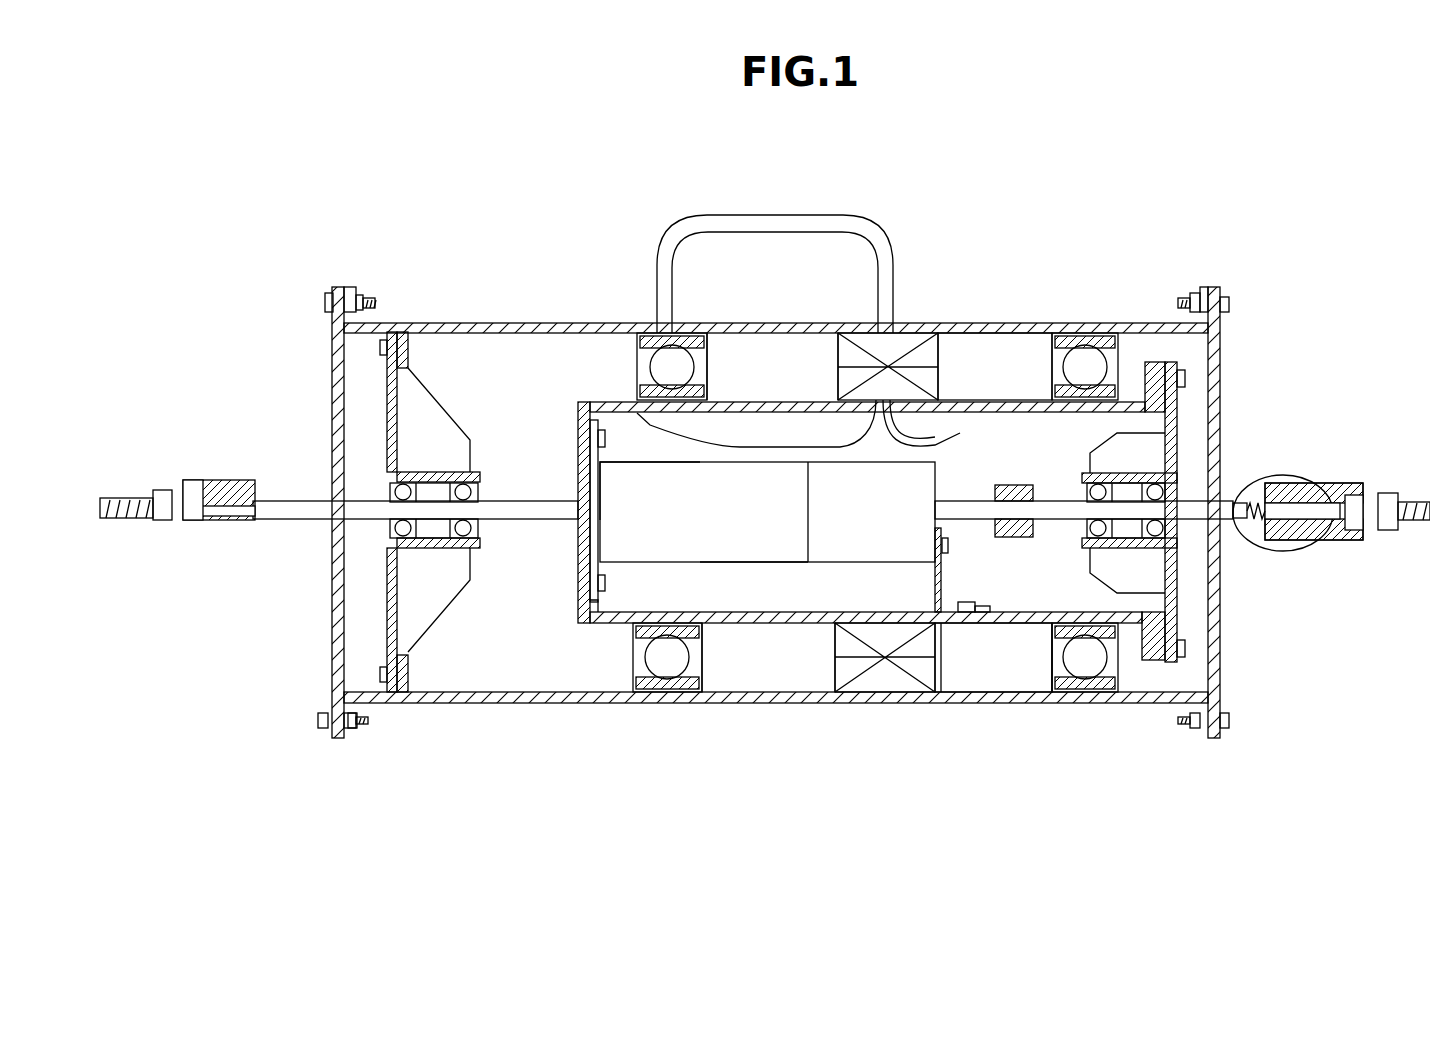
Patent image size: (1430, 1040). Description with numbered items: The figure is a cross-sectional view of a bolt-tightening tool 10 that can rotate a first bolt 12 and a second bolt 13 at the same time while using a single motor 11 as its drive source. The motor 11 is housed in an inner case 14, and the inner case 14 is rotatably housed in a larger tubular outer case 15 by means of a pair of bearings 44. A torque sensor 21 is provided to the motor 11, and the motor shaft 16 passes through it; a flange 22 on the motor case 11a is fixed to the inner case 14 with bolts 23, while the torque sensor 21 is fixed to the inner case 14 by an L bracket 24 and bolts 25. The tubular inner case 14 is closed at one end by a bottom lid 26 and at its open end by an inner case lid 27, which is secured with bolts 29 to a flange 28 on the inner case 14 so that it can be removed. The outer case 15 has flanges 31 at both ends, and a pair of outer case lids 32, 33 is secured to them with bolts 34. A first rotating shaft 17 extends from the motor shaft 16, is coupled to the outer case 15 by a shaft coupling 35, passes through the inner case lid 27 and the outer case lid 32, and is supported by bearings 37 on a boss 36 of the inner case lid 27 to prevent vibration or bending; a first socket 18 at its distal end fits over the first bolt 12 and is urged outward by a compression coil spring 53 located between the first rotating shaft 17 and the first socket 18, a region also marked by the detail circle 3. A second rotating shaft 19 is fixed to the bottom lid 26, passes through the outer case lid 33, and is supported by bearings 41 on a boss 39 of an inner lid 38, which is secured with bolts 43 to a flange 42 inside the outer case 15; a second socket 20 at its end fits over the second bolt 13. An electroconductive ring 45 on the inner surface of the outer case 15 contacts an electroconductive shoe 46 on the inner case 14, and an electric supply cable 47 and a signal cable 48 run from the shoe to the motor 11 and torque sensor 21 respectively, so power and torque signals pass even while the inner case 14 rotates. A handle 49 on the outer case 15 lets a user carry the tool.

The bolt-tightening tool 10 is at (1238, 162).
The outer case 15 is at (905, 324).
The outer case lid 33 is at (330, 323).
The outer case lid 32 is at (1222, 343).
The flange 31 is at (346, 290).
The bolt 34 is at (328, 295).
The handle 49 is at (783, 215).
The flange 42 is at (410, 350).
The inner lid 38 is at (387, 390).
The boss 39 is at (443, 552).
The bolt 43 is at (380, 347).
The bearing 41 is at (395, 482).
The second rotating shaft 19 is at (303, 498).
The second socket 20 is at (215, 522).
The second bolt 13 is at (162, 527).
The electric supply cable 47 is at (637, 400).
The inner case 14 is at (796, 625).
The bottom lid 26 is at (578, 592).
The flange 22 is at (603, 515).
The bolt 25 is at (935, 528).
The bolt 23 is at (598, 590).
The L bracket 24 is at (983, 523).
The motor 11 is at (747, 563).
The motor case 11a is at (765, 552).
The torque sensor 21 is at (867, 563).
The bearing 44 is at (630, 340).
The electroconductive ring 45 is at (948, 345).
The electroconductive shoe 46 is at (990, 345).
The signal cable 48 is at (962, 433).
The motor shaft 16 is at (1042, 625).
The first rotating shaft 17 is at (1231, 490).
The shaft coupling 35 is at (1018, 485).
The bearing 37 is at (1163, 522).
The boss 36 is at (1158, 558).
The inner case lid 27 is at (1170, 662).
The flange 28 is at (1155, 660).
The bolt 29 is at (1185, 378).
The detail circle FIG. 3 is at (1311, 550).
The first socket 18 is at (1332, 482).
The compression coil spring 53 is at (1262, 503).
The first bolt 12 is at (1392, 532).